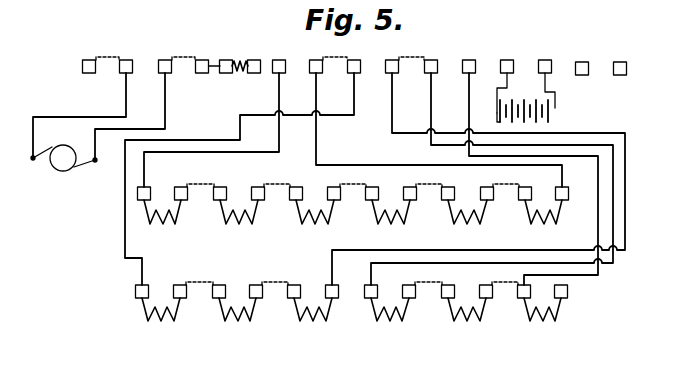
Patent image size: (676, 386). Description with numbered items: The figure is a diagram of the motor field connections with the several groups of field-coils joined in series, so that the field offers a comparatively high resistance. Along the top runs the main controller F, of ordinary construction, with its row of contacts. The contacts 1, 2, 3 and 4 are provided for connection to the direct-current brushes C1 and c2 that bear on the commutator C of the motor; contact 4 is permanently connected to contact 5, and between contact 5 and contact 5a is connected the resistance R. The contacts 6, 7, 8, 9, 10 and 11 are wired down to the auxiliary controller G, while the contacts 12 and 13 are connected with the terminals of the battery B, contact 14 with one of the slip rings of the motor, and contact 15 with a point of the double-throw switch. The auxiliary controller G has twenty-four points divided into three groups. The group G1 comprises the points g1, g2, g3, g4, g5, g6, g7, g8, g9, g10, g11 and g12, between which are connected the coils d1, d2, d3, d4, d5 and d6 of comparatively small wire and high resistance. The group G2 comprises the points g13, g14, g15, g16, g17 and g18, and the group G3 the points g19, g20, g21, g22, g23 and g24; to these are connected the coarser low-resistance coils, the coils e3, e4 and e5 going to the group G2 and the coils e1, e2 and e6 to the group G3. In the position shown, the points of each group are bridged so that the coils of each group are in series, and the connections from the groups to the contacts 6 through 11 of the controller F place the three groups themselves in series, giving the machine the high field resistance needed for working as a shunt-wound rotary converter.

The contact 1 is at (101, 56).
The contact 2 is at (82, 99).
The contact 3 is at (144, 100).
The contact 4 is at (208, 56).
The contact 5 is at (226, 56).
The contact 5a is at (252, 55).
The contact 6 is at (215, 113).
The contact 7 is at (436, 113).
The contact 8 is at (243, 162).
The contact 9 is at (478, 162).
The contact 10 is at (492, 162).
The contact 11 is at (530, 162).
The contact 12 is at (507, 76).
The contact 13 is at (546, 73).
The contact 14 is at (583, 57).
The contact 15 is at (621, 57).
The main controller F is at (82, 66).
The resistance R is at (241, 74).
The battery B is at (522, 101).
The commutator C is at (63, 158).
The direct-current brush C1 is at (42, 145).
The direct-current brush c2 is at (82, 175).
The auxiliary controller G is at (110, 297).
The group of points G1 is at (272, 228).
The group of points G2 is at (206, 342).
The group of points G3 is at (435, 342).
The point g1 is at (157, 183).
The point g2 is at (182, 182).
The point g3 is at (217, 187).
The point g4 is at (259, 182).
The point g5 is at (293, 188).
The point g6 is at (331, 187).
The point g7 is at (372, 198).
The point g8 is at (410, 188).
The point g9 is at (447, 200).
The point g10 is at (485, 188).
The point g11 is at (523, 199).
The point g12 is at (561, 188).
The point g13 is at (148, 284).
The point g14 is at (185, 298).
The point g15 is at (220, 284).
The point g16 is at (260, 298).
The point g17 is at (296, 284).
The point g18 is at (338, 297).
The point g19 is at (377, 285).
The point g20 is at (413, 298).
The point g21 is at (453, 285).
The point g22 is at (490, 298).
The point g23 is at (527, 285).
The point g24 is at (568, 291).
The field-coil d1 is at (169, 219).
The field-coil d2 is at (239, 220).
The field-coil d3 is at (315, 220).
The field-coil d4 is at (391, 220).
The field-coil d5 is at (467, 220).
The field-coil d6 is at (543, 220).
The field-coil e1 is at (161, 321).
The field-coil e2 is at (237, 323).
The field-coil e3 is at (313, 322).
The field-coil e4 is at (390, 322).
The field-coil e5 is at (467, 323).
The field-coil e6 is at (542, 323).